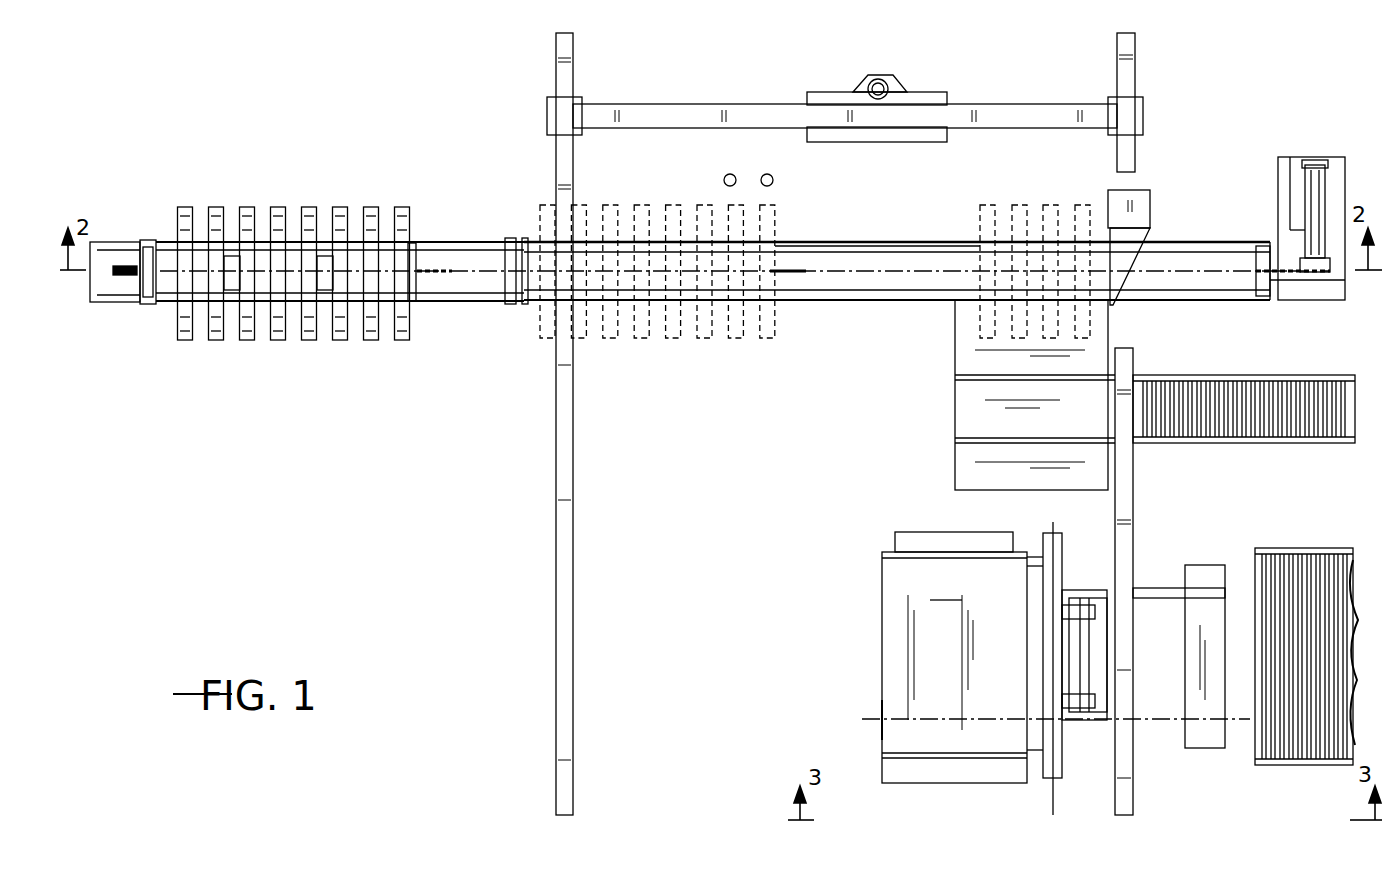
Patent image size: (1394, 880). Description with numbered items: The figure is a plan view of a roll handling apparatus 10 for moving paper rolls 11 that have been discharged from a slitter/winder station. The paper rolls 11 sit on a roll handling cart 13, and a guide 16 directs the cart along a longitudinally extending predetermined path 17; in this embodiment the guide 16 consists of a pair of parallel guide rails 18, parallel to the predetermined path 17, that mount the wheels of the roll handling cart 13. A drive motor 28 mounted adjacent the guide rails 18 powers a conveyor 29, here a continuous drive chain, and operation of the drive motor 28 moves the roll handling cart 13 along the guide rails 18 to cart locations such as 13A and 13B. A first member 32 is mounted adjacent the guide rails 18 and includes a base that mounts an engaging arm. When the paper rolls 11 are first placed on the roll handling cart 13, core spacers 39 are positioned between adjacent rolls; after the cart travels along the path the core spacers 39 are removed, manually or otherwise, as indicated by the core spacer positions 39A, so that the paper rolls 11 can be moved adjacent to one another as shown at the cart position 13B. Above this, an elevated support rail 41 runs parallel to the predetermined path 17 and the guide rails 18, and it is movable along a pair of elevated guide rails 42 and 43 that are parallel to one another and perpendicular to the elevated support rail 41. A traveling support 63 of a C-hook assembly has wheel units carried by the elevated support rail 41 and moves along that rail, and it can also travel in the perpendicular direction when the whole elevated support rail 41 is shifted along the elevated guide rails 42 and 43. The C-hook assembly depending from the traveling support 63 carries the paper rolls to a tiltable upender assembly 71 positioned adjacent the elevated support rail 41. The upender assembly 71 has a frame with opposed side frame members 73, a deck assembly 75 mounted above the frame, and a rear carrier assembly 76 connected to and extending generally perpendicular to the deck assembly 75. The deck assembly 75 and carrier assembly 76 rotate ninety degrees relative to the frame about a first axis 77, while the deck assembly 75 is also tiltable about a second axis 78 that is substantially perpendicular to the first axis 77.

The roll handling apparatus 10 is at (878, 238).
The paper rolls 11 is at (185, 205).
The roll handling cart 13 is at (160, 305).
The cart location 13A is at (625, 320).
The cart location 13B is at (1040, 305).
The guide 16 is at (457, 306).
The predetermined path 17 is at (805, 278).
The guide rails 18 is at (950, 240).
The drive motor 28 is at (1302, 180).
The conveyor 29 is at (1282, 285).
The first member 32 is at (1150, 212).
The core spacers 39 is at (232, 262).
The core spacer positions 39A is at (722, 205).
The elevated support rail 41 is at (671, 104).
The elevated guide rail 42 is at (575, 582).
The elevated guide rail 43 is at (1135, 505).
The traveling support 63 is at (896, 90).
The tiltable upender assembly 71 is at (935, 788).
The side frame members 73 is at (1160, 590).
The deck assembly 75 is at (946, 585).
The rear carrier assembly 76 is at (1045, 575).
The first axis 77 is at (1055, 802).
The second axis 78 is at (878, 700).